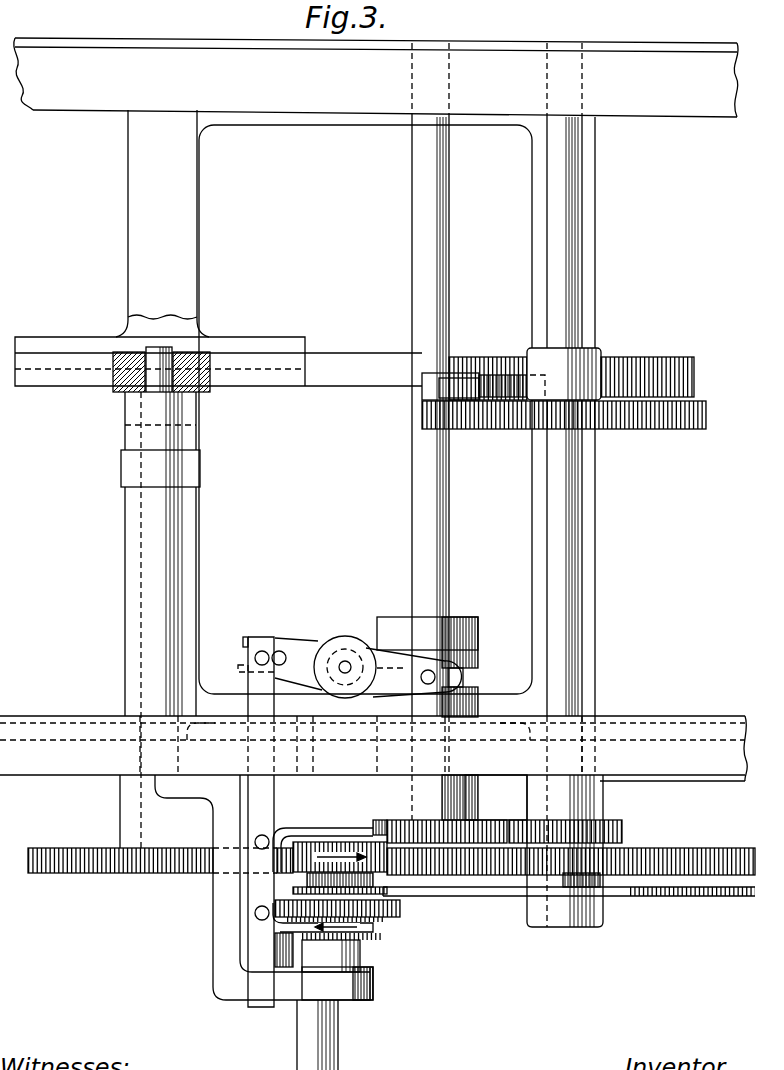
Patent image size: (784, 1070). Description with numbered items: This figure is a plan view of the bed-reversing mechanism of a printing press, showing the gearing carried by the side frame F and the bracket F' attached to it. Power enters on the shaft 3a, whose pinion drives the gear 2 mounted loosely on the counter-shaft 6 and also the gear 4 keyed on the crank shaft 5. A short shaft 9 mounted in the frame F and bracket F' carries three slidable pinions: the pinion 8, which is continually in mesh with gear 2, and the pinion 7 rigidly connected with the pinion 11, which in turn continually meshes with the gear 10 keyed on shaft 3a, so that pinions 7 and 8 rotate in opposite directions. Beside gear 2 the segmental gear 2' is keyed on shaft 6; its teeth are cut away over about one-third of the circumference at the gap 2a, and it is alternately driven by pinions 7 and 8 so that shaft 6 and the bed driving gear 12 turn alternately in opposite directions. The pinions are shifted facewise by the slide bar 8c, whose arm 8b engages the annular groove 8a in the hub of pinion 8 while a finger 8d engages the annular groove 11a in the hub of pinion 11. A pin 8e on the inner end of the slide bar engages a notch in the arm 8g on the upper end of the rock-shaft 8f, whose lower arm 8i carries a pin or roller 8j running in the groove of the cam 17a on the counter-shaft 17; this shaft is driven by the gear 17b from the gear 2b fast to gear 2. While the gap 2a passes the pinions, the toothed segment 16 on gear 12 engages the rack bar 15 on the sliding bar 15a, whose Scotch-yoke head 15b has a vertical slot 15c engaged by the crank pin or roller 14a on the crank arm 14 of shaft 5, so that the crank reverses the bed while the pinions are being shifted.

The gear 2 is at (571, 850).
The gap 2a is at (648, 898).
The segmental gear 2' is at (692, 916).
The gear 2b is at (614, 823).
The shaft 3a is at (330, 1048).
The gear 4 is at (70, 853).
The crank shaft 5 is at (163, 578).
The counter-shaft 6 is at (563, 570).
The pinion 7 is at (388, 892).
The pinion 8 is at (378, 857).
The annular groove 8a is at (397, 808).
The arm 8b is at (333, 808).
The slide bar 8c is at (255, 685).
The finger 8d is at (278, 922).
The pin 8e is at (262, 651).
The rock-shaft 8f is at (345, 660).
The arm 8g is at (297, 650).
The arm 8i is at (413, 657).
The pin or roller 8j is at (462, 671).
The short shaft 9 is at (350, 950).
The gear 10 is at (280, 906).
The pinion 11 is at (380, 934).
The annular groove 11a is at (375, 930).
The gear 12 is at (501, 430).
The crank arm 14 is at (133, 419).
The crank pin or roller 14a is at (197, 389).
The rack bar 15 is at (650, 368).
The sliding bar 15a is at (335, 367).
The Scotch-yoke head 15b is at (127, 356).
The vertical slot 15c is at (180, 360).
The toothed segment 16 is at (422, 385).
The counter-shaft 17 is at (440, 553).
The cam 17a is at (478, 632).
The gear 17b is at (496, 817).
The side frame F is at (373, 730).
The bracket F' is at (259, 887).